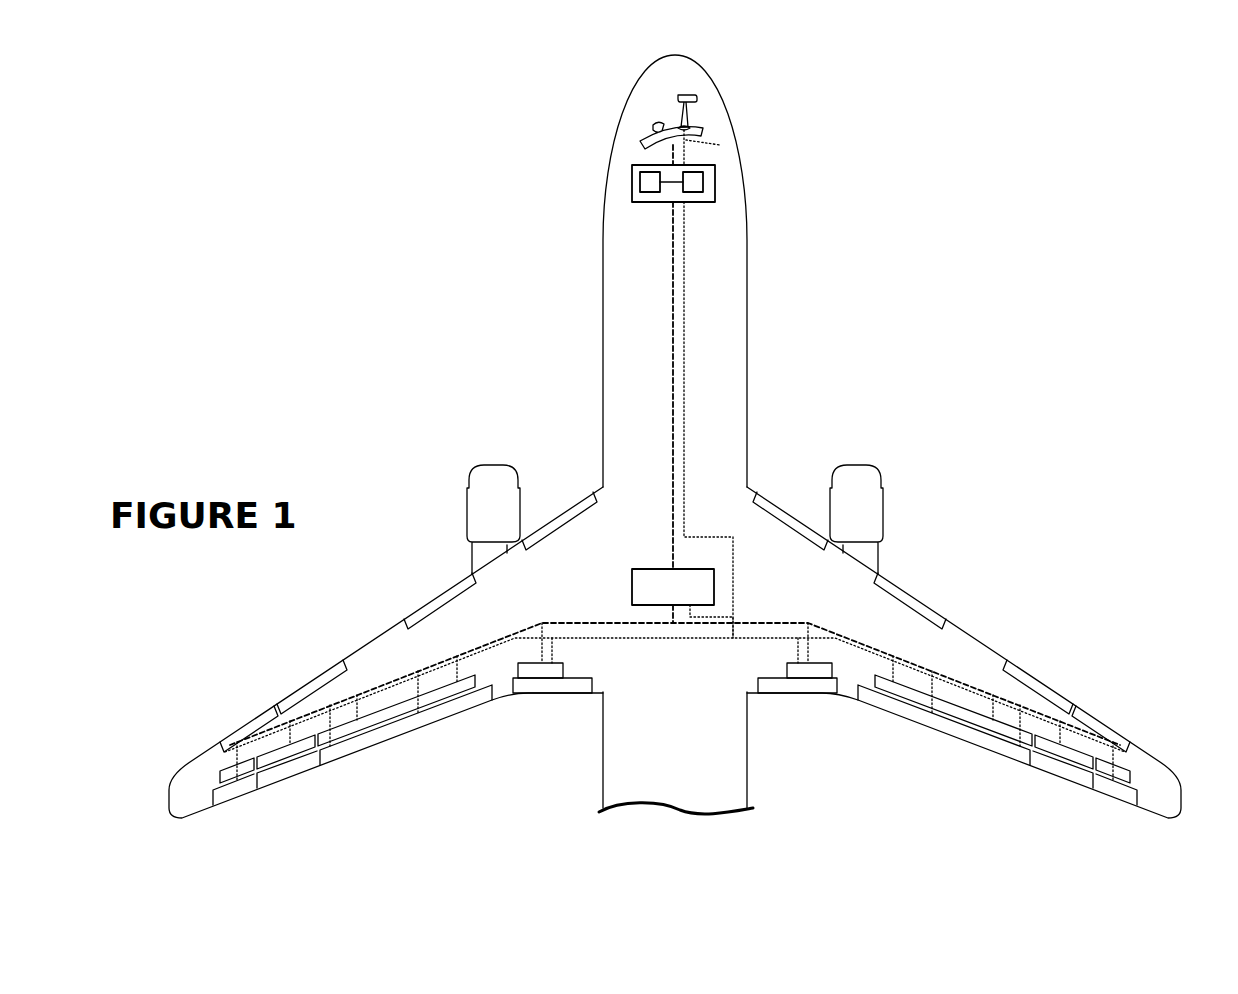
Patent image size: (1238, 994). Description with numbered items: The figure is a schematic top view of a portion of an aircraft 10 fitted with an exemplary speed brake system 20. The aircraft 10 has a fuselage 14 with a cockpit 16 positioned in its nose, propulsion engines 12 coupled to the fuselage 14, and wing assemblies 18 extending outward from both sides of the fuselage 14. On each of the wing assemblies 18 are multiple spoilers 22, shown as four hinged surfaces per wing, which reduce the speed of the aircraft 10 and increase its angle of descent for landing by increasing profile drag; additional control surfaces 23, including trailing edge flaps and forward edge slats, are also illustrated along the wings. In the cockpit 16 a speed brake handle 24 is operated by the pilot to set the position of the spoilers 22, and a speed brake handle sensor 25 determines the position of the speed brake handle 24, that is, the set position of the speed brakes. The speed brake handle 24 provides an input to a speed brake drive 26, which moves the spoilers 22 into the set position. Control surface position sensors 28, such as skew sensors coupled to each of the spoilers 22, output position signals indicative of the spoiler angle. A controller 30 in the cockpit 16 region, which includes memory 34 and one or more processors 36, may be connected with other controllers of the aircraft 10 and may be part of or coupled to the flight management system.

The aircraft 10 is at (624, 86).
The propulsion engines 12 is at (866, 476).
The fuselage 14 is at (600, 380).
The cockpit 16 is at (655, 145).
The wing assemblies 18 is at (945, 655).
The speed brake system 20 is at (533, 661).
The spoilers 22 is at (820, 680).
The additional control surfaces 23 is at (807, 527).
The speed brake handle 24 is at (688, 96).
The speed brake handle sensor 25 is at (720, 145).
The speed brake drive 26 is at (685, 568).
The control surface position sensors 28 is at (1118, 845).
The controller 30 is at (657, 203).
The memory 34 is at (640, 192).
The processors 36 is at (697, 197).